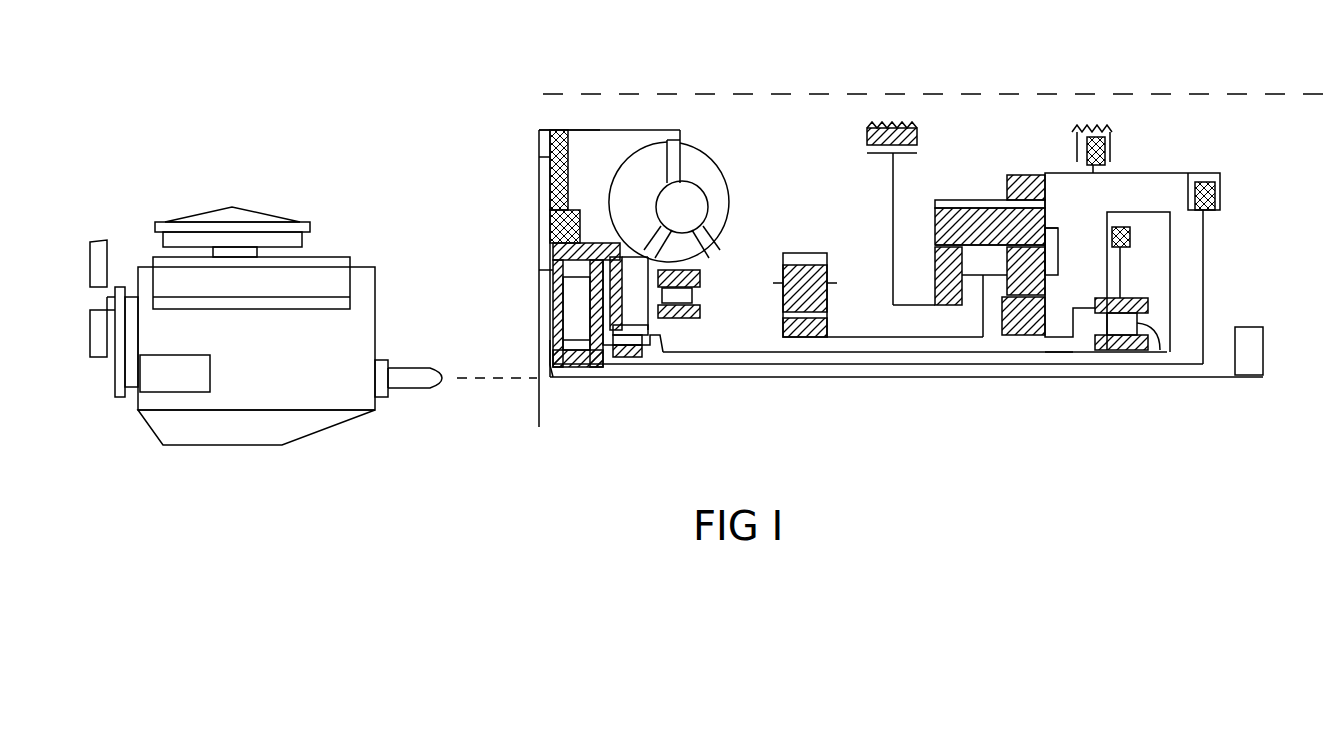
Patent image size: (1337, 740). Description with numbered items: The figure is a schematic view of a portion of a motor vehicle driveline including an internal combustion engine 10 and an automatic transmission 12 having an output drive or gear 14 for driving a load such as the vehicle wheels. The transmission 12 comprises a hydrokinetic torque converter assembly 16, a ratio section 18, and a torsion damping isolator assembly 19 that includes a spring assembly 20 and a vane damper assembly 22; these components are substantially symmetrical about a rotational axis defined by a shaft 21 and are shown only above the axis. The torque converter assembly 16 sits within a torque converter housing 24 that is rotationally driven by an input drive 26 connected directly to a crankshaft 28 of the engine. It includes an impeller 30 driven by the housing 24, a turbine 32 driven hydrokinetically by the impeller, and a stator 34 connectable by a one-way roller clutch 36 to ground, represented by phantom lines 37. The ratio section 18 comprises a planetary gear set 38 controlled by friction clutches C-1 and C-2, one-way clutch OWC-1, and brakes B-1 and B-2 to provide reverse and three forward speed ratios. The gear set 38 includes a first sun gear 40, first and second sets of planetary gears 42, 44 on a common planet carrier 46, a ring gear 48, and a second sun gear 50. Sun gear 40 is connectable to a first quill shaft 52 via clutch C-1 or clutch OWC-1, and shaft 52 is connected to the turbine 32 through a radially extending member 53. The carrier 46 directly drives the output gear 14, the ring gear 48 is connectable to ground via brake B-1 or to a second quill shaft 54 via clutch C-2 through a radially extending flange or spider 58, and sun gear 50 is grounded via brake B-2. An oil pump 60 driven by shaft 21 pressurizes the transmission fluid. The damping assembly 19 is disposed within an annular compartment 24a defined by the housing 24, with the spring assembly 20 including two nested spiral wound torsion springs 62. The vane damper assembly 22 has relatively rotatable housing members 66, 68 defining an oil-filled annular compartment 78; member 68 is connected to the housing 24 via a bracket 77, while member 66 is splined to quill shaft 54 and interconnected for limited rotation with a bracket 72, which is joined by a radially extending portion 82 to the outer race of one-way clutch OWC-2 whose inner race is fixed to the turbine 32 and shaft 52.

The internal combustion engine 10 is at (336, 213).
The automatic transmission 12 is at (917, 68).
The output drive or gear 14 is at (800, 252).
The torque converter assembly 16 is at (609, 114).
The ratio section 18 is at (978, 138).
The torsion damping isolator assembly 19 is at (588, 128).
The spring assembly 20 is at (582, 125).
The shaft 21 is at (921, 378).
The vane damper assembly 22 is at (553, 303).
The torque converter housing 24 is at (663, 127).
The annular compartment 24a is at (627, 127).
The input drive 26 is at (507, 380).
The crankshaft 28 is at (428, 388).
The impeller 30 is at (785, 182).
The turbine 32 is at (681, 134).
The stator 34 is at (698, 263).
The one-way roller clutch 36 is at (697, 297).
The phantom lines 37 is at (1163, 75).
The planetary gear set 38 is at (972, 172).
The first sun gear 40 is at (1001, 318).
The first set of planetary gears 42 is at (1047, 212).
The second set of planetary gears 44 is at (1080, 283).
The planet carrier 46 is at (1078, 225).
The ring gear 48 is at (1012, 174).
The second sun gear 50 is at (933, 268).
The first quill shaft 52 is at (1055, 353).
The radially extending member 53 is at (663, 328).
The second quill shaft 54 is at (806, 367).
The radially extending flange or spider 58 is at (1207, 265).
The oil pump 60 is at (1264, 335).
The spiral wound torsion springs 62 is at (552, 157).
The first housing member 66 is at (553, 270).
The second housing member 68 is at (575, 317).
The bracket 72 is at (598, 236).
The bracket 77 is at (550, 342).
The annular compartment 78 is at (563, 340).
The radially extending portion 82 is at (630, 258).
The brake B-1 is at (1111, 142).
The brake B-2 is at (866, 137).
The friction clutch C-1 is at (1131, 237).
The friction clutch C-2 is at (1217, 193).
The one-way clutch OWC-1 is at (1158, 352).
The one-way clutch OWC-2 is at (663, 350).